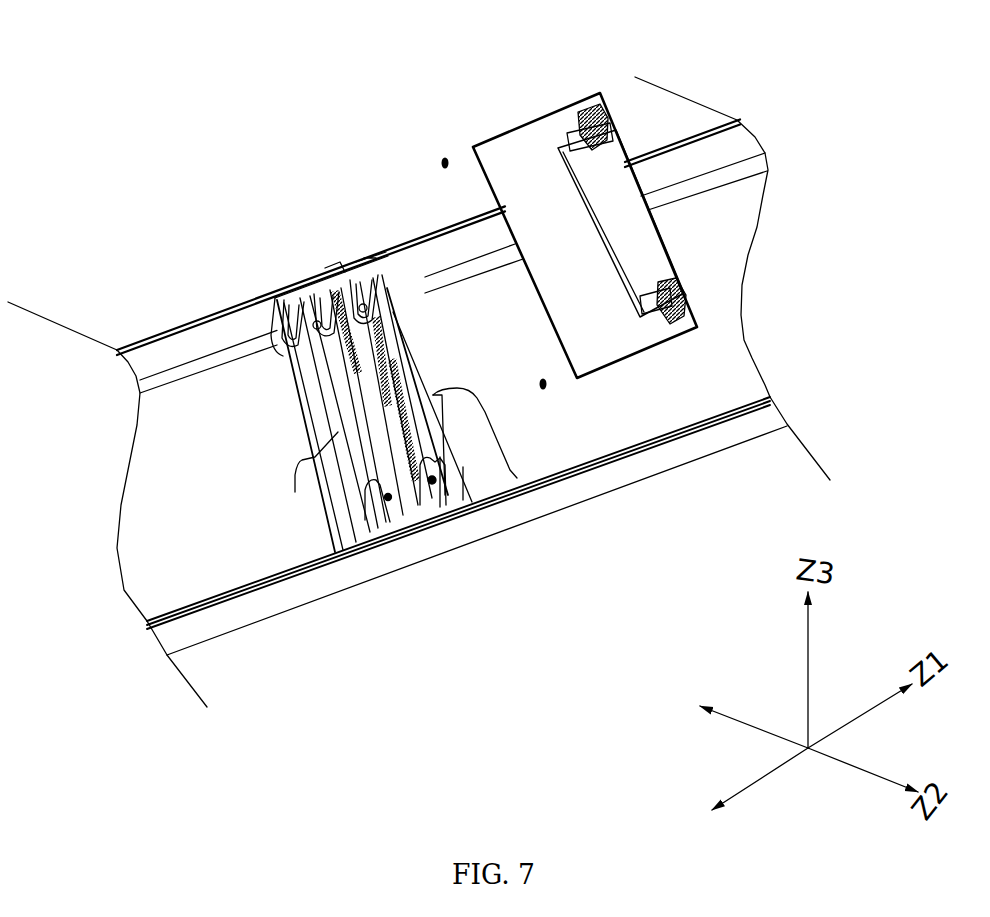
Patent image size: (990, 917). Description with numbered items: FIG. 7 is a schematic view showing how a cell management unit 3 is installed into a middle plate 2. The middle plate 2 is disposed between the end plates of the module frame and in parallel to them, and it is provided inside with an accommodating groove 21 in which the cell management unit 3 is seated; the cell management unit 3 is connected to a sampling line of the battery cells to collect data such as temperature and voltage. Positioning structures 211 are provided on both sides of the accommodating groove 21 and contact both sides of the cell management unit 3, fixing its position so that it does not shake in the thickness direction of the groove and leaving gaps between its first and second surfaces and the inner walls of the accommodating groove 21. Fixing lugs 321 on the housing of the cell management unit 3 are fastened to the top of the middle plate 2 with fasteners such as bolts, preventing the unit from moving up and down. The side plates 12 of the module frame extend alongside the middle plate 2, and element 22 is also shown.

The conductive connection assembly 2 is at (272, 337).
The conductive strip 21 is at (370, 258).
The bent tab portion 211 is at (333, 265).
The fastening clip 22 is at (338, 552).
The cover plate 3 is at (530, 138).
The fastening member 321 is at (598, 110).
The rail 12 is at (697, 440).